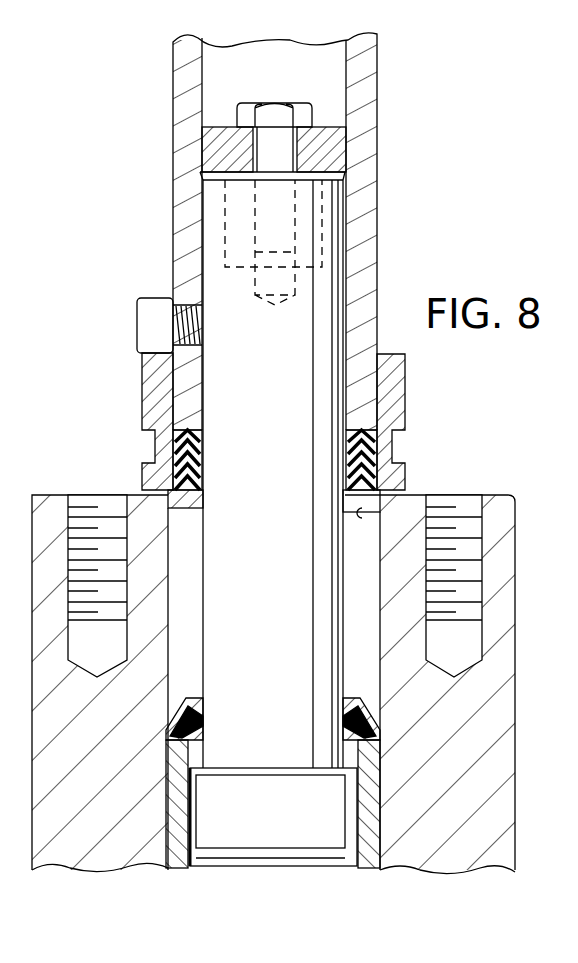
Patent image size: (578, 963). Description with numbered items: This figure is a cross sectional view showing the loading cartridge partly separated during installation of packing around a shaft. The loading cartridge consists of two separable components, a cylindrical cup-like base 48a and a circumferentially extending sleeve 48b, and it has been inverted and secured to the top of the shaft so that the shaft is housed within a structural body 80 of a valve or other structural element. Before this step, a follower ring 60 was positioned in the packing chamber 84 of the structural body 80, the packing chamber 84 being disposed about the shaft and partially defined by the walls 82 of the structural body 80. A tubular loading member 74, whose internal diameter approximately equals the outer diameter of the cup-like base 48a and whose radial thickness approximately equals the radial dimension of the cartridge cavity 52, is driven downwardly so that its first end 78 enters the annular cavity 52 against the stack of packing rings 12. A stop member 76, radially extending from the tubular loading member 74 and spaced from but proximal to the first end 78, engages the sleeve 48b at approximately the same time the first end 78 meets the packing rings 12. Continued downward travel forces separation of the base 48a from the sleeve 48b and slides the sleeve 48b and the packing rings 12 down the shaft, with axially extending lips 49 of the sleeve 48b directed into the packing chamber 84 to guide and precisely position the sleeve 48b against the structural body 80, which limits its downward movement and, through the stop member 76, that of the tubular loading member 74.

The packing rings 12 is at (203, 443).
The cup-like base 48a is at (327, 138).
The sleeve 48b is at (383, 383).
The axially extending lips 49 is at (203, 495).
The cartridge cavity 52 is at (390, 497).
The follower ring 60 is at (368, 705).
The tubular loading member 74 is at (365, 168).
The stop member 76 is at (157, 323).
The first end 78 is at (183, 394).
The structural body 80 is at (495, 520).
The walls 82 is at (168, 652).
The packing chamber 84 is at (373, 615).